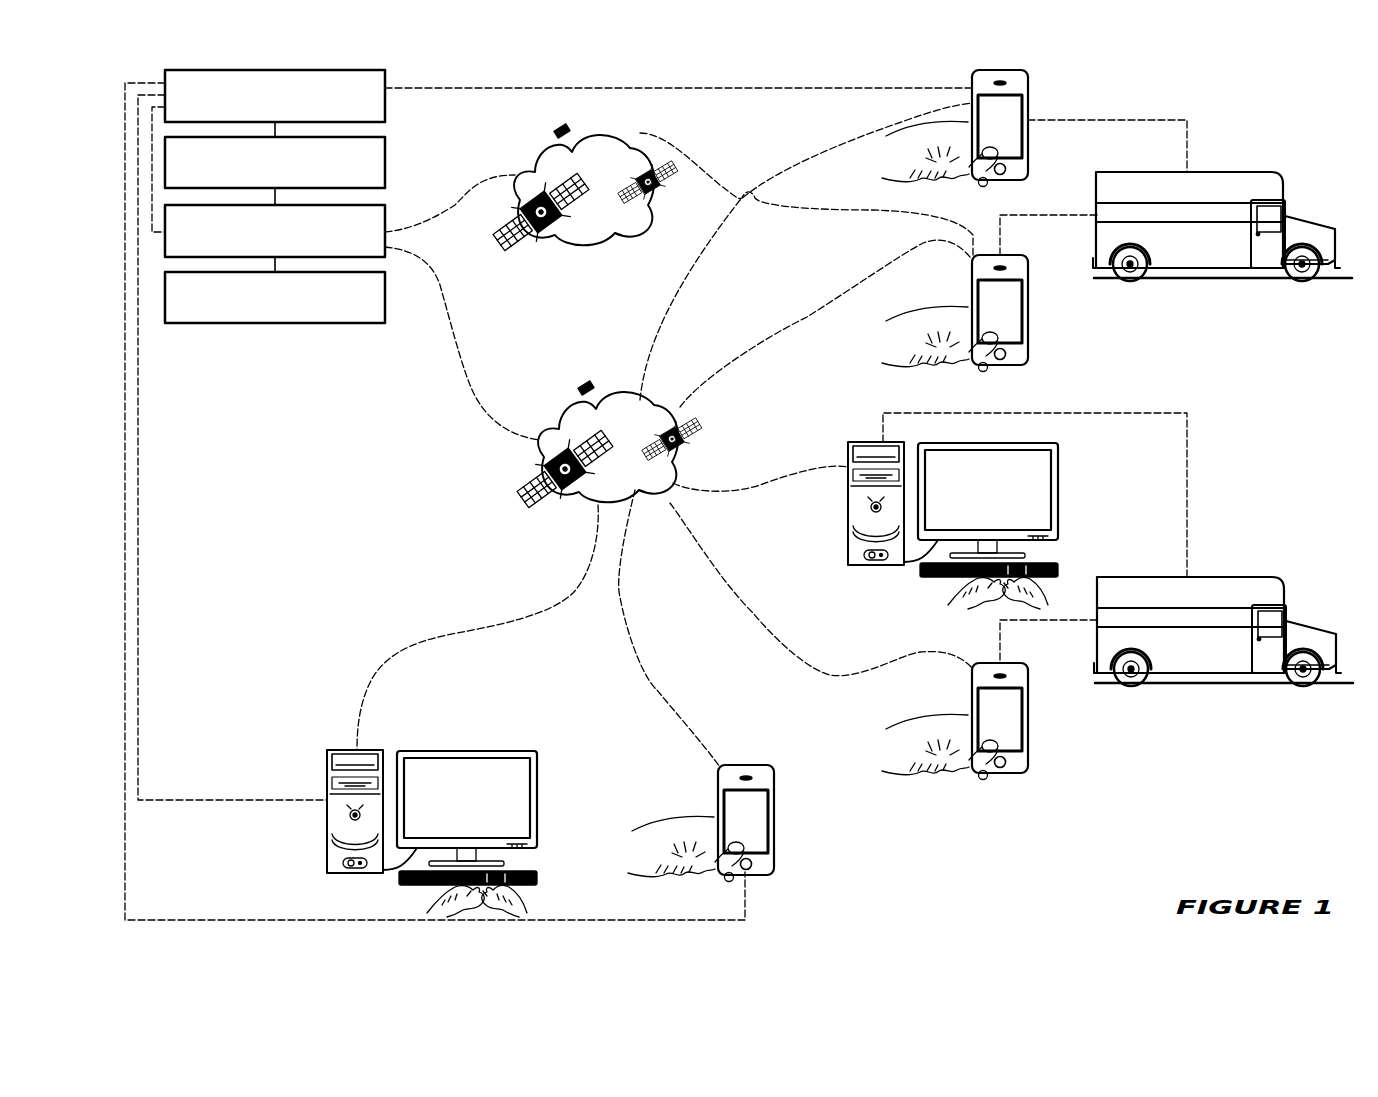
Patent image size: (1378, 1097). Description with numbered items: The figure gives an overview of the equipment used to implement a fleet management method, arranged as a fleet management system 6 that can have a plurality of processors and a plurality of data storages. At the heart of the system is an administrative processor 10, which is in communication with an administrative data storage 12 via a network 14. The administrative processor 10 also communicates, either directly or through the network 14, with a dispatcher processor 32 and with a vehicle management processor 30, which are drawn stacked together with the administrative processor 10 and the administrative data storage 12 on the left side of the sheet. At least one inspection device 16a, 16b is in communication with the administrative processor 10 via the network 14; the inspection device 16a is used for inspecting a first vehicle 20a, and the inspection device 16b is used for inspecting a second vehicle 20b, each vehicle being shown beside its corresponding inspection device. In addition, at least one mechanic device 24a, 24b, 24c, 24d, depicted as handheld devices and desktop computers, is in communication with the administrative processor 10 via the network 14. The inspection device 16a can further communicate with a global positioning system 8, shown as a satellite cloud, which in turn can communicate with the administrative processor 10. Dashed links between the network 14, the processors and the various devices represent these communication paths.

The fleet management system 6 is at (1124, 827).
The global positioning system 8 is at (543, 143).
The administrative processor 10 is at (385, 222).
The administrative data storage 12 is at (385, 300).
The network 14 is at (568, 405).
The inspection device 16a is at (1028, 261).
The inspection device 16b is at (1028, 669).
The first vehicle 20a is at (1278, 172).
The second vehicle 20b is at (1279, 577).
The mechanic device 24a is at (1028, 76).
The mechanic device 24b is at (848, 447).
The mechanic device 24c is at (773, 771).
The mechanic device 24d is at (327, 755).
The vehicle management processor 30 is at (385, 110).
The dispatcher processor 32 is at (385, 165).